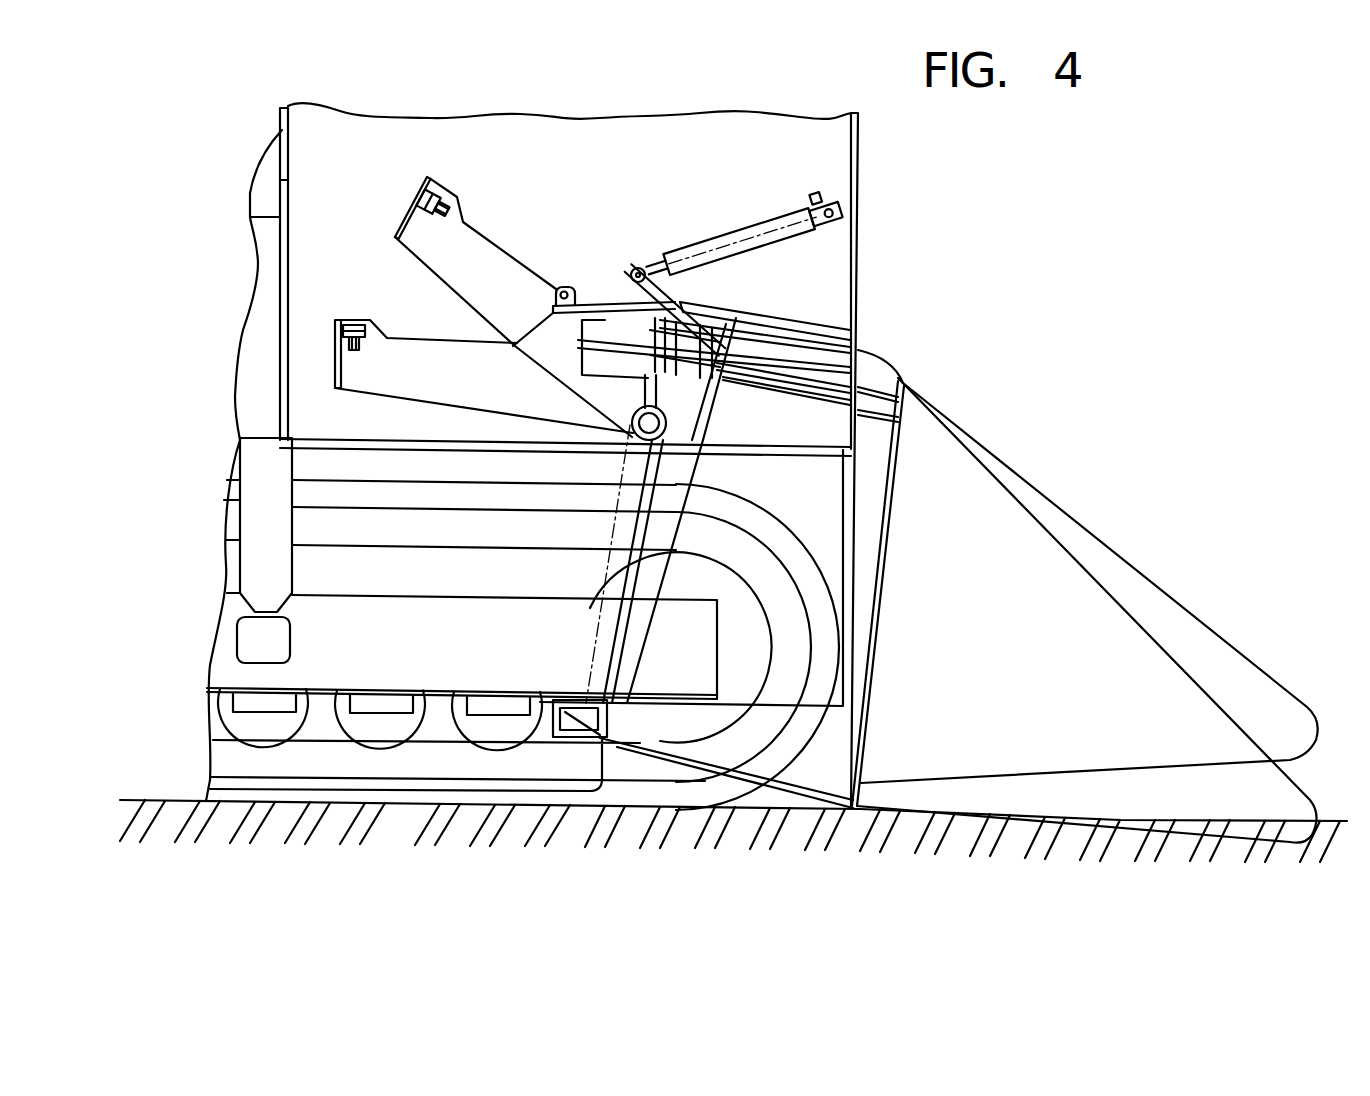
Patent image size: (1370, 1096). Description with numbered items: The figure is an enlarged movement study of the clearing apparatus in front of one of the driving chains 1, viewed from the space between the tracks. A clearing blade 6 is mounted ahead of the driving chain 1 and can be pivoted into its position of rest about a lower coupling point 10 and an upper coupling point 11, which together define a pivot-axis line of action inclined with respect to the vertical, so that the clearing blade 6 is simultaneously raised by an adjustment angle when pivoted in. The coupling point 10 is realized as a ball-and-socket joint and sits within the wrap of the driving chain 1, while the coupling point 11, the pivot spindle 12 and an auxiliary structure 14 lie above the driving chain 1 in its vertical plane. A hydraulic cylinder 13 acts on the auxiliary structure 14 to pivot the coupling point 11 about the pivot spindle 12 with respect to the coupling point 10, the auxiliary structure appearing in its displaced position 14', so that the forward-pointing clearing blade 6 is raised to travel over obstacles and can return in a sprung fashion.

The driving chain 1 is at (667, 790).
The clearing blade 6 is at (1088, 607).
The coupling point 10 is at (574, 740).
The coupling point 11 is at (640, 303).
The pivot spindle 12 is at (632, 420).
The hydraulic cylinder 13 is at (773, 215).
The auxiliary structure 14 is at (513, 298).
The lower flap 14' is at (484, 341).